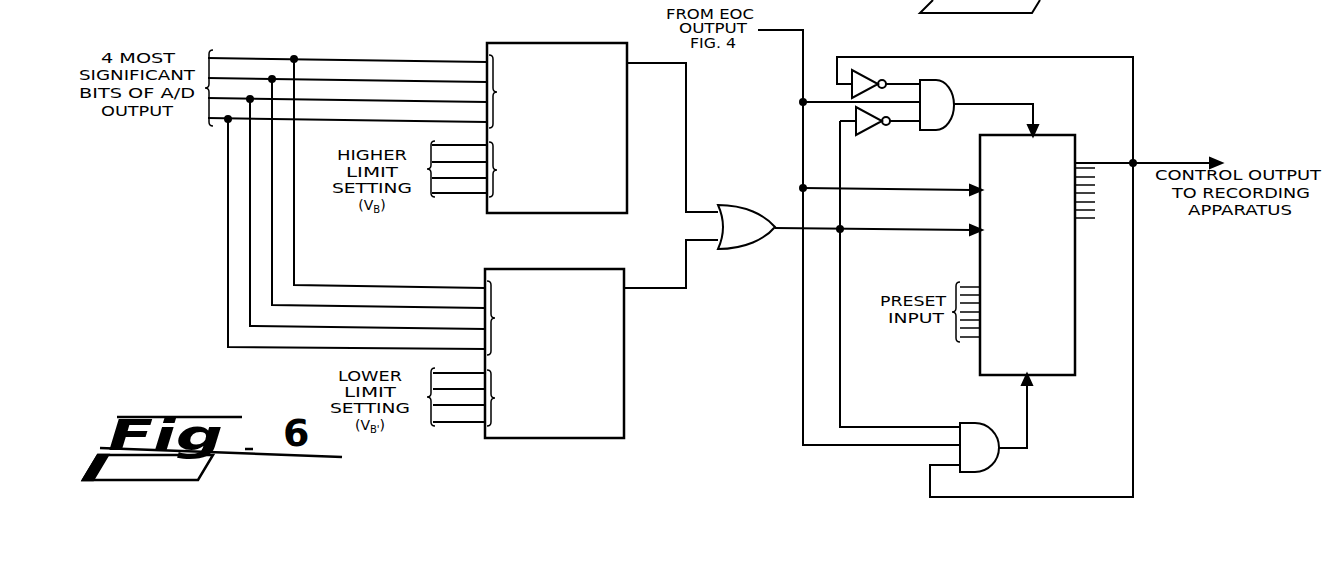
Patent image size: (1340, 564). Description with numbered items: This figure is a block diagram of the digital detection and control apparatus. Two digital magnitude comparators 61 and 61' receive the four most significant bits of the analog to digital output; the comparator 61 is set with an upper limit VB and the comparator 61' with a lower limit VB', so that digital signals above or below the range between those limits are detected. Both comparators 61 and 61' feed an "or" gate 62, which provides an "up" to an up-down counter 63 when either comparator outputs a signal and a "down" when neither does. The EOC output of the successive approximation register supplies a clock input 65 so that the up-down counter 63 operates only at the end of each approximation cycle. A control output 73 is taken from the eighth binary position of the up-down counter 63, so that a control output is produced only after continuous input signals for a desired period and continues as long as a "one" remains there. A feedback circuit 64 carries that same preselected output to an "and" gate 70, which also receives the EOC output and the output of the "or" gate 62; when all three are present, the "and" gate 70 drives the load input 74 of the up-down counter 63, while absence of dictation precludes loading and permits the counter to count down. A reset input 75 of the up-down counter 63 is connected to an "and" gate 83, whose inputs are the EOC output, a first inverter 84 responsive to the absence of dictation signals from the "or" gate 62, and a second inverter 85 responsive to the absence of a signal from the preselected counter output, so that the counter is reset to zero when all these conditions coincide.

The digital magnitude comparator 61 is at (573, 138).
The digital magnitude comparator 61' is at (583, 353).
The "or" gate 62 is at (757, 252).
The up-down counter 63 is at (1077, 308).
The feedback circuit 64 is at (1133, 366).
The clock input 65 is at (977, 186).
The "and" gate 70 is at (986, 469).
The control output 73 is at (1106, 161).
The load input 74 is at (1030, 380).
The reset input 75 is at (1038, 130).
The "and" gate 83 is at (950, 93).
The first inverter 84 is at (868, 131).
The second inverter 85 is at (866, 82).